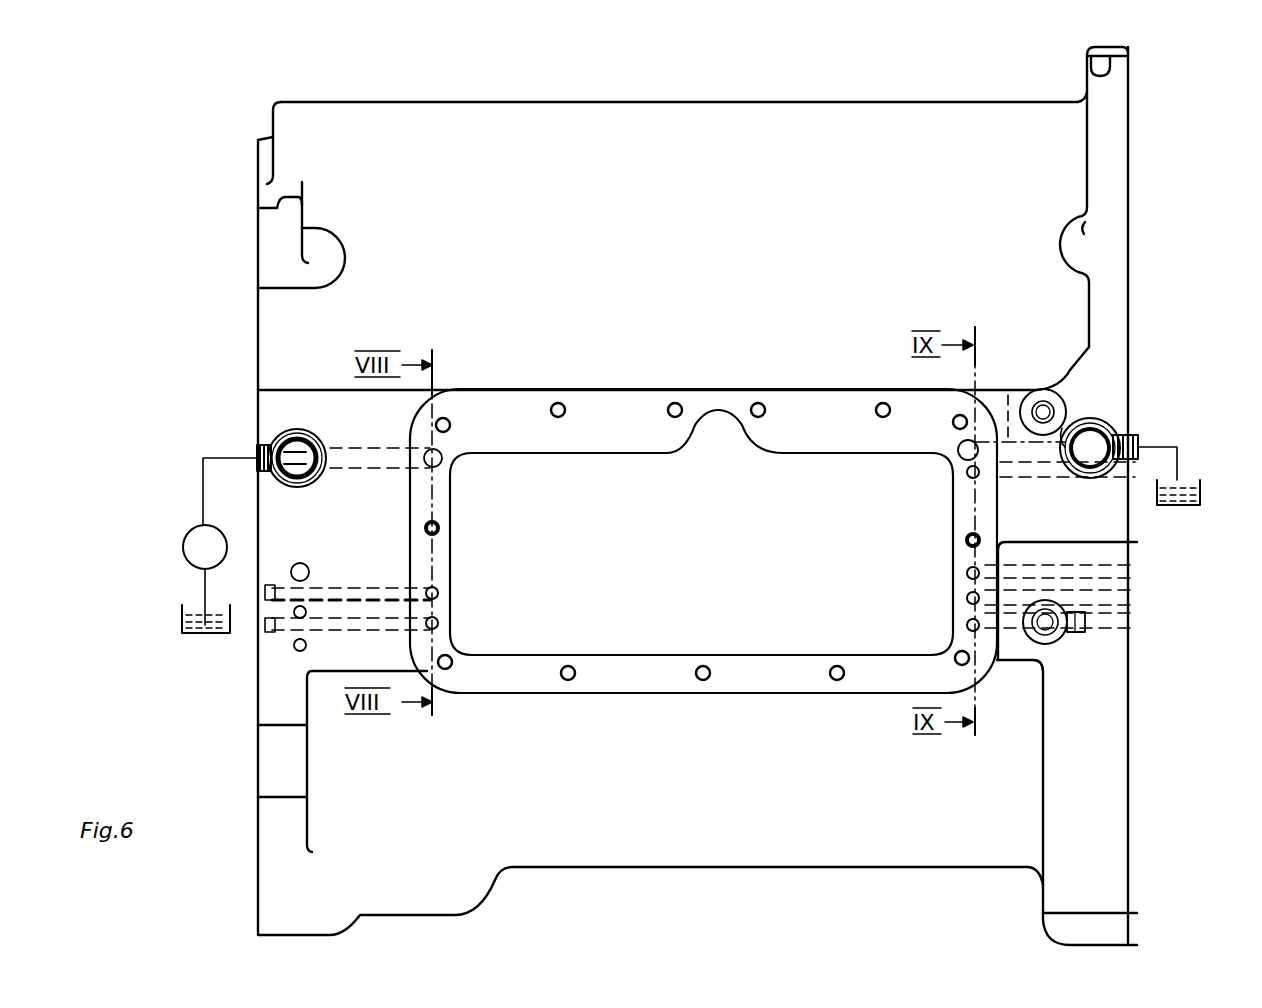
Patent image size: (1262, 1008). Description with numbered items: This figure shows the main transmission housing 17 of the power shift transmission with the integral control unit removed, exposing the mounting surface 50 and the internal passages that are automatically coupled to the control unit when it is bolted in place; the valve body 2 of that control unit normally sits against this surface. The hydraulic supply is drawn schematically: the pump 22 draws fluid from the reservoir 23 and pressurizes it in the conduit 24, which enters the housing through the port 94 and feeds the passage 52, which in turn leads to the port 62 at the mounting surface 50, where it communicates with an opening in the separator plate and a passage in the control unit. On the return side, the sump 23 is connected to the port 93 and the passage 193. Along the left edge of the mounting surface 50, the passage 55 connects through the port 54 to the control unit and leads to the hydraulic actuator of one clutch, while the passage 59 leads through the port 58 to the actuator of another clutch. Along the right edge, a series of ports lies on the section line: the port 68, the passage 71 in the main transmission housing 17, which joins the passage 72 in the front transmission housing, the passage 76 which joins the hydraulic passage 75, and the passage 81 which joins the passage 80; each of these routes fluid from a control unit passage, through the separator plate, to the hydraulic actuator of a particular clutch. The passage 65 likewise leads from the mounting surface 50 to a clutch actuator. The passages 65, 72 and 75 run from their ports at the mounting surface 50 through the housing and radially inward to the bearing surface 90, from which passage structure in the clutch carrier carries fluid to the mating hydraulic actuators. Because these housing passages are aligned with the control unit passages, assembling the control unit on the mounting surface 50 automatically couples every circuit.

The valve body 2 is at (1133, 793).
The main transmission housing 17 is at (1128, 280).
The pump 22 is at (183, 547).
The reservoir 23 is at (182, 627).
The conduit 24 is at (230, 458).
The mounting surface 50 is at (628, 393).
The passage 52 is at (375, 468).
The port 54 is at (440, 593).
The passage 55 is at (335, 590).
The port 58 is at (440, 623).
The passage 59 is at (335, 630).
The port 62 is at (441, 454).
The passage 65 is at (1040, 472).
The port 68 is at (967, 473).
The passage 71 is at (967, 572).
The passage 72 is at (1018, 570).
The hydraulic passage 75 is at (1115, 596).
The passage 76 is at (967, 598).
The passage 80 is at (1110, 628).
The passage 81 is at (967, 625).
The bearing surface 90 is at (1138, 418).
The port 93 is at (1090, 446).
The port 94 is at (318, 442).
The passage 193 is at (1020, 402).